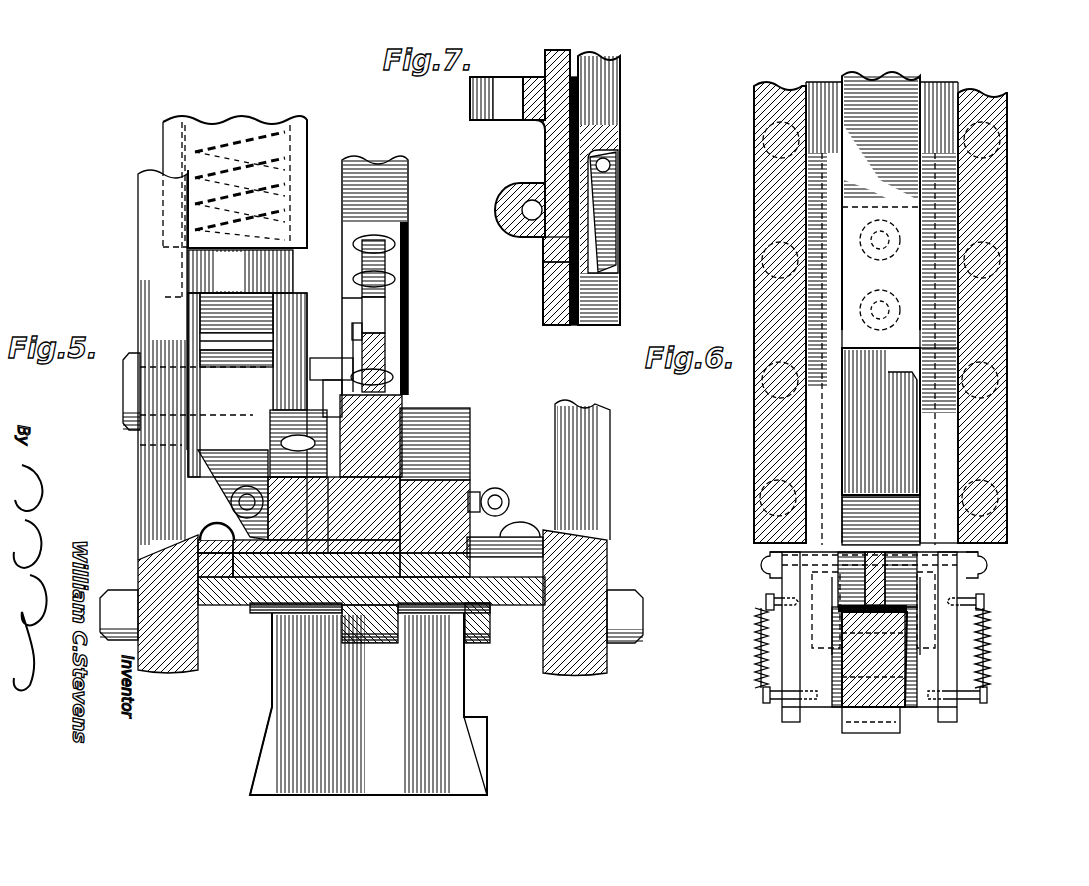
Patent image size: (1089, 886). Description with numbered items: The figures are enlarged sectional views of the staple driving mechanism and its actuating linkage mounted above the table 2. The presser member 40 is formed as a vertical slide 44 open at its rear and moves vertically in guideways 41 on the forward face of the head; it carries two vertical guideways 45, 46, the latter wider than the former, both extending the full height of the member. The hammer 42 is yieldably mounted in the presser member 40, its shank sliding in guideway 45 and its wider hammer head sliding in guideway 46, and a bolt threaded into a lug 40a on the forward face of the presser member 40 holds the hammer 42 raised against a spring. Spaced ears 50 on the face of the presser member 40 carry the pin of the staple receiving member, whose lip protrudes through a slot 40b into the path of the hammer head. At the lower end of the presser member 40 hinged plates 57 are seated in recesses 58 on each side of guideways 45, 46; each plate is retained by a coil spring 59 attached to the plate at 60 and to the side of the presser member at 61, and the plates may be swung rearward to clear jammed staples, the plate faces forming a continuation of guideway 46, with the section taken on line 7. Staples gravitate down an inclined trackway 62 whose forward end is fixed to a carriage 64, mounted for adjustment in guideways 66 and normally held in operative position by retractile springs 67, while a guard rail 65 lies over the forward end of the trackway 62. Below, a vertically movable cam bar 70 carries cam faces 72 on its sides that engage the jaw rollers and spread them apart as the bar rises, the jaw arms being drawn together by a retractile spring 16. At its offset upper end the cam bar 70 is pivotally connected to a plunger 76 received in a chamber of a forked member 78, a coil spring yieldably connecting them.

In FIG. 5, the table 2 is at (371, 608).
In FIG. 6, the section line 7— 7 is at (898, 493).
In FIG. 5, the retractile spring 16 is at (212, 528).
In FIG. 7, the presser member 40 is at (620, 107).
In FIG. 6, the presser member 40 is at (806, 298).
In FIG. 7, the lug 40a is at (470, 108).
In FIG. 7, the slot 40b is at (548, 245).
In FIG. 6, the guideways 41 is at (920, 200).
In FIG. 6, the hammer 42 is at (882, 76).
In FIG. 7, the vertical slide 44 is at (547, 66).
In FIG. 6, the vertical slide 44 is at (950, 320).
In FIG. 6, the guideway 45 is at (917, 432).
In FIG. 7, the guideway 46 is at (570, 288).
In FIG. 6, the guideway 46 is at (935, 465).
In FIG. 7, the ears 50 is at (520, 185).
In FIG. 7, the plates 57 is at (605, 213).
In FIG. 6, the plates 57 is at (800, 582).
In FIG. 6, the recess 58 is at (757, 674).
In FIG. 6, the coil spring 59 is at (755, 650).
In FIG. 6, the spring attachment 60 is at (763, 694).
In FIG. 6, the spring attachment 61 is at (766, 603).
In FIG. 5, the inclined trackway 62 is at (407, 378).
In FIG. 6, the inclined trackway 62 is at (850, 713).
In FIG. 5, the carriage 64 is at (456, 444).
In FIG. 5, the guard rail 65 is at (377, 323).
In FIG. 6, the guard rail 65 is at (855, 556).
In FIG. 5, the guideways 66 is at (553, 480).
In FIG. 5, the retractile springs 67 is at (230, 496).
In FIG. 5, the cam bar 70 is at (368, 704).
In FIG. 5, the cam faces 72 is at (262, 750).
In FIG. 5, the plunger 76 is at (257, 363).
In FIG. 5, the forked member 78 is at (163, 155).